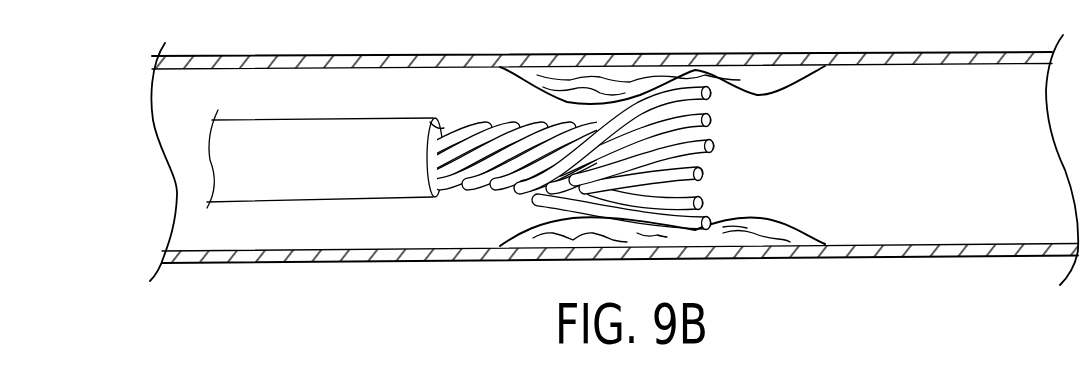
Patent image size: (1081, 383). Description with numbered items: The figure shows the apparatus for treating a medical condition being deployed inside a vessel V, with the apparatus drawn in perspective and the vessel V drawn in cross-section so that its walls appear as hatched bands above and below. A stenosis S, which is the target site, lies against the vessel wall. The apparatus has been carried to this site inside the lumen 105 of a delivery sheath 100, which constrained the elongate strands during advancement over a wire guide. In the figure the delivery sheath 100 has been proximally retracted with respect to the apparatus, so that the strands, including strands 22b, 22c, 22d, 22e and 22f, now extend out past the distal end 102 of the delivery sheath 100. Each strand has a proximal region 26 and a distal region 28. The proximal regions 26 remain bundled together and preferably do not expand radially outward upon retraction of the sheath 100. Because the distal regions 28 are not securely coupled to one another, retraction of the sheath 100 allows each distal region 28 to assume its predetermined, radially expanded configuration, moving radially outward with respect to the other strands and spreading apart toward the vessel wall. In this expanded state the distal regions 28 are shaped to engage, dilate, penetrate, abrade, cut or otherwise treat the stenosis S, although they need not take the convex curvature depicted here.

The vessel V is at (436, 62).
The stenosis S is at (578, 85).
The delivery sheath 100 is at (291, 150).
The distal end 102 is at (437, 129).
The lumen 105 is at (440, 123).
The proximal region 26 is at (456, 201).
The distal region 28 is at (594, 192).
The strand 22b is at (714, 147).
The strand 22c is at (704, 87).
The strand 22d is at (712, 121).
The strand 22e is at (703, 176).
The strand 22f is at (703, 204).